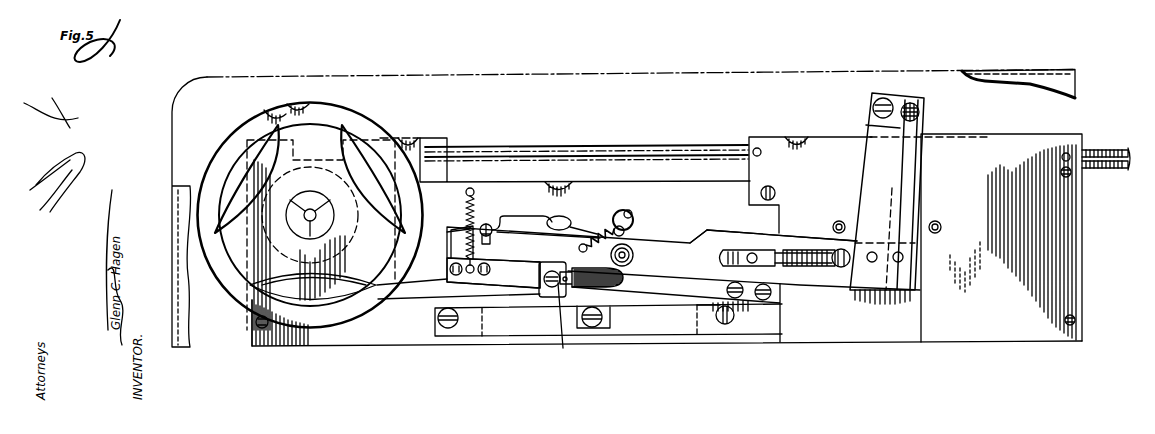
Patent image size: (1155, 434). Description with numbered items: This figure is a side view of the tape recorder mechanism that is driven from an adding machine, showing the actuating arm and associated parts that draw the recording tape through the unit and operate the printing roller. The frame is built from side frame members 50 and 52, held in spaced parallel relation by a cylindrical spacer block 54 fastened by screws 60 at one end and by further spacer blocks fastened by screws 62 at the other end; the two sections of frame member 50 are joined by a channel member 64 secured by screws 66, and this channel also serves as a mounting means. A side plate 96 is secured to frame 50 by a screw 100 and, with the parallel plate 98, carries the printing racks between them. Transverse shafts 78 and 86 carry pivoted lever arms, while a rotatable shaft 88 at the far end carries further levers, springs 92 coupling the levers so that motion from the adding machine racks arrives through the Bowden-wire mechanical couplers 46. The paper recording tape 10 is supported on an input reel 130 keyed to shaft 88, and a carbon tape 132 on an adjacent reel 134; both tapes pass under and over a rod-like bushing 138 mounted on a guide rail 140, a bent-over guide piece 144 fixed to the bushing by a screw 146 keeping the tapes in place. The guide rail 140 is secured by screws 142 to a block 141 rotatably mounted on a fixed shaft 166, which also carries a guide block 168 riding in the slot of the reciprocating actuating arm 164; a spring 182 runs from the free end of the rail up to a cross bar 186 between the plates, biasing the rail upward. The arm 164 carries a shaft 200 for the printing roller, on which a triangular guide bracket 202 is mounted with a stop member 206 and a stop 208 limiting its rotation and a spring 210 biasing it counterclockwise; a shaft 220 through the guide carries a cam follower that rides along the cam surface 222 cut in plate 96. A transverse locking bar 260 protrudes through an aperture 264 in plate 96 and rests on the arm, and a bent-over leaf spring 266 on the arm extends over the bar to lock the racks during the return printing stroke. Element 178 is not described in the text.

The paper recording tape 10 is at (428, 288).
The mechanical couplers 46 is at (1126, 136).
The side frame member 50 is at (428, 150).
The side frame member 52 is at (405, 138).
The cylindrical spacer block 54 is at (252, 340).
The screws 60 is at (262, 330).
The screws 62 is at (1070, 178).
The channel member 64 is at (494, 327).
The screws 66 is at (456, 328).
The shaft 78 is at (934, 221).
The shaft 86 is at (852, 212).
The rotatable shaft 88 is at (300, 226).
The springs 92 is at (452, 162).
The plate 96 is at (708, 200).
The plate 98 is at (556, 190).
The screw 100 is at (774, 190).
The input reel 130 is at (250, 121).
The carbon tape 132 is at (422, 300).
The reel 134 is at (278, 112).
The rod-like bushing 138 is at (293, 103).
The guide rail 140 is at (688, 286).
The block 141 is at (780, 258).
The screws 142 is at (772, 303).
The bent-over guide piece 144 is at (548, 300).
The screw 146 is at (573, 323).
The actuating arm 164 is at (641, 247).
The fixed shaft 166 is at (755, 254).
The guide block 168 is at (740, 253).
The tilted bar 178 is at (921, 115).
The spring 182 is at (440, 194).
The cross bar 186 is at (478, 178).
The shaft 200 is at (634, 244).
The triangular-shaped guide bracket 202 is at (622, 212).
The stop member 206 is at (578, 228).
The stop 208 is at (631, 212).
The spring 210 is at (600, 236).
The shaft 220 is at (625, 230).
The cam surface 222 is at (546, 215).
The transverse locking bar 260 is at (491, 226).
The aperture 264 is at (490, 222).
The bent-over leaf spring 266 is at (447, 206).